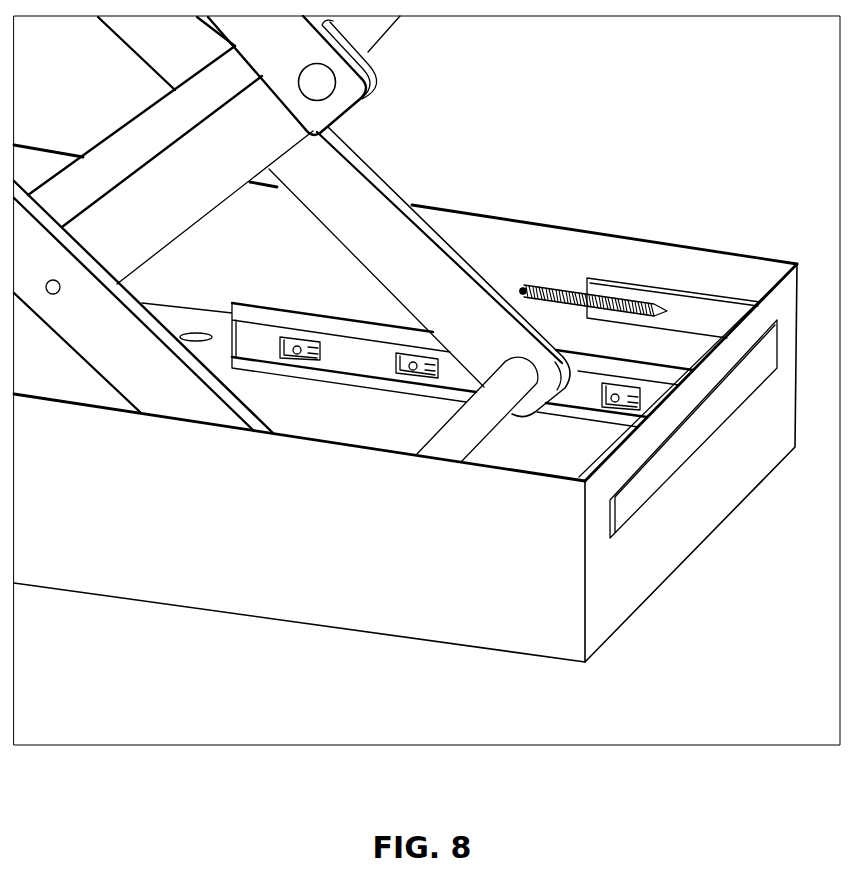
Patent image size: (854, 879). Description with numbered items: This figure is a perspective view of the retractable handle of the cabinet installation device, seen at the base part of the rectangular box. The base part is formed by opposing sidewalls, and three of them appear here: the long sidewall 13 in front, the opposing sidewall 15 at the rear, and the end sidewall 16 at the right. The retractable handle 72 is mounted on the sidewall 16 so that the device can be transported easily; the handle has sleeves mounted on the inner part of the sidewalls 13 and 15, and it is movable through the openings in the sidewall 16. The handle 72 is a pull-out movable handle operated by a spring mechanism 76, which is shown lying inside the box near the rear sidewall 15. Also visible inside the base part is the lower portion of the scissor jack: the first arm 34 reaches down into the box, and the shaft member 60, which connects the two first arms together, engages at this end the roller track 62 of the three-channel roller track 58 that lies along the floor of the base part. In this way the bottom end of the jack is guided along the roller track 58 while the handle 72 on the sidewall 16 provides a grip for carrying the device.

The sidewall 13 is at (278, 597).
The sidewall 15 is at (658, 262).
The sidewall 16 is at (737, 482).
The first arm 34 is at (350, 205).
The 3 channel roller track 58 is at (594, 402).
The shaft member 60 is at (465, 430).
The roller track 62 is at (185, 318).
The retractable handle 72 is at (753, 368).
The spring mechanism 76 is at (563, 282).